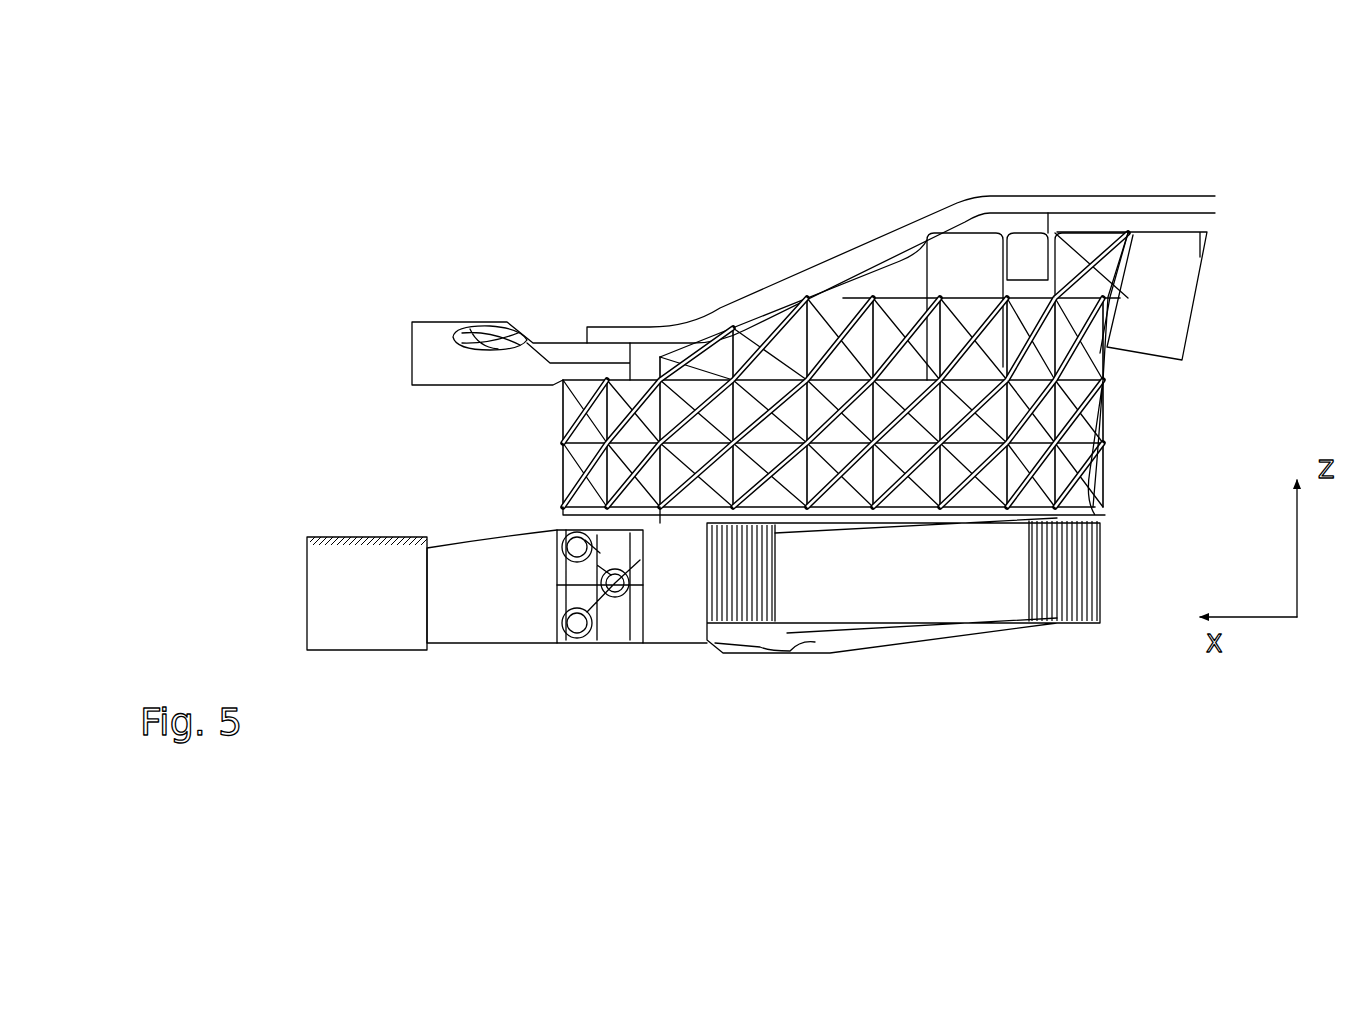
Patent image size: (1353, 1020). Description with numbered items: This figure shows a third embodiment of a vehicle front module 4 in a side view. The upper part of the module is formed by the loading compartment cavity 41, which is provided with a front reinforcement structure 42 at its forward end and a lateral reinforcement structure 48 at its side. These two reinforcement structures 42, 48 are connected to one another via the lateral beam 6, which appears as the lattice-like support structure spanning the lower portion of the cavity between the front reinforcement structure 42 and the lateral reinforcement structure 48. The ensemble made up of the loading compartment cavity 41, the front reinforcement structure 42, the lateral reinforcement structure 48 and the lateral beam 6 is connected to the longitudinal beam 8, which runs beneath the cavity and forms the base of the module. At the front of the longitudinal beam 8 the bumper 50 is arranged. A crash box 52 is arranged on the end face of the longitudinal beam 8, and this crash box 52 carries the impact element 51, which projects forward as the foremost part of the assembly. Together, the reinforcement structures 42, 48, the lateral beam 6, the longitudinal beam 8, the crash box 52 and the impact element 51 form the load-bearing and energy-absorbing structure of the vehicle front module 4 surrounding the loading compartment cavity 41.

The vehicle front module 4 is at (292, 236).
The loading compartment cavity 41 is at (766, 250).
The front reinforcement structure 42 is at (427, 370).
The lateral beam 6 is at (563, 427).
The lateral reinforcement structure 48 is at (1040, 421).
The bumper 50 is at (186, 554).
The impact element 51 is at (322, 578).
The crash box 52 is at (538, 625).
The longitudinal beam 8 is at (843, 607).